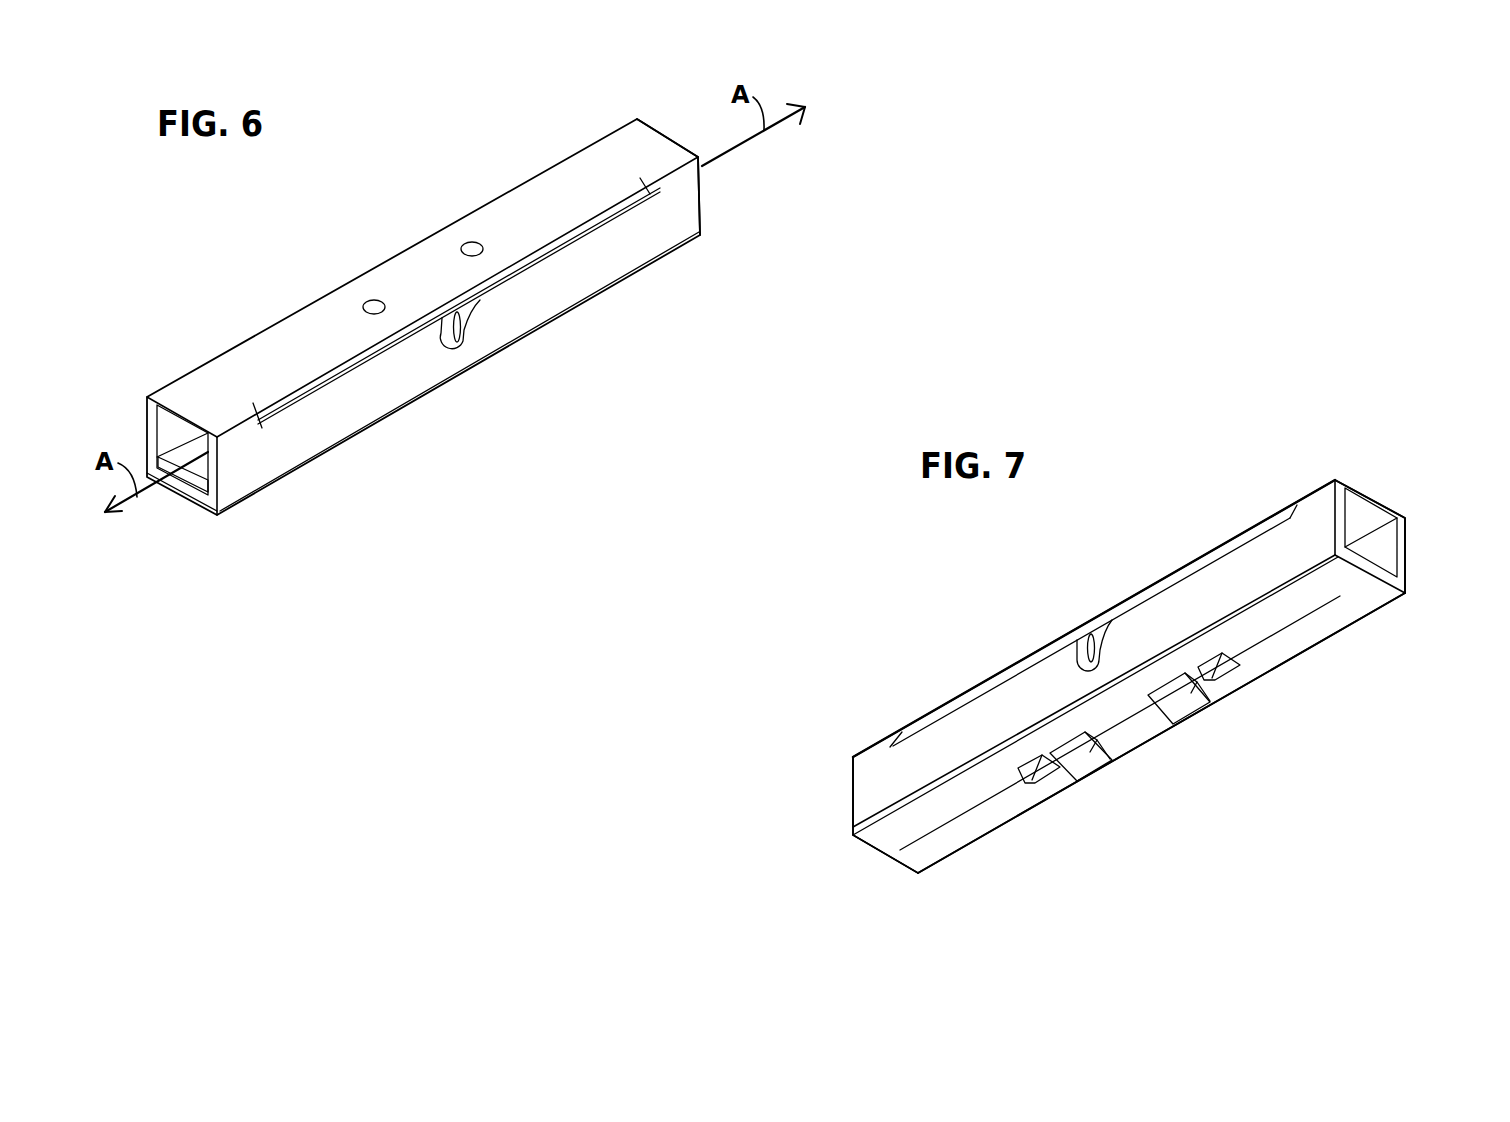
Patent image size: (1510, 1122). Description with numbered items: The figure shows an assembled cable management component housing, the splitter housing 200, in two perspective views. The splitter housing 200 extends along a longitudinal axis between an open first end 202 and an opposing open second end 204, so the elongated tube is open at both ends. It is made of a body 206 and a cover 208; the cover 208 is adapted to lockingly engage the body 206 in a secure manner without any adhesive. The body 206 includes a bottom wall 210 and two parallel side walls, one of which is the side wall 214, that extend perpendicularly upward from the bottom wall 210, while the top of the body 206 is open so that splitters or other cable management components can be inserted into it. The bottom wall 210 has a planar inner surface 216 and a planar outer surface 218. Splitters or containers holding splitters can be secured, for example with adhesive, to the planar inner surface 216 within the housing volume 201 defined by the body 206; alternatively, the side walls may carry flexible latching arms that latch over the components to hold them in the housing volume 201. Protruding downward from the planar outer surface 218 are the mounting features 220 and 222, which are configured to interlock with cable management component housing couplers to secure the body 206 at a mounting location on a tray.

In FIG. 6, the splitter housing 200 is at (549, 112).
In FIG. 7, the splitter housing 200 is at (1317, 430).
In FIG. 7, the housing volume 201 is at (1362, 520).
In FIG. 6, the open first end 202 is at (172, 485).
In FIG. 6, the open second end 204 is at (705, 193).
In FIG. 7, the open second end 204 is at (1403, 548).
In FIG. 6, the body 206 is at (415, 360).
In FIG. 7, the body 206 is at (872, 796).
In FIG. 6, the cover 208 is at (413, 268).
In FIG. 7, the cover 208 is at (1240, 532).
In FIG. 7, the bottom wall 210 is at (937, 840).
In FIG. 7, the side wall 214 is at (877, 767).
In FIG. 6, the planar inner surface 216 is at (205, 476).
In FIG. 7, the planar outer surface 218 is at (993, 805).
In FIG. 7, the mounting feature 220 is at (1042, 775).
In FIG. 7, the mounting feature 222 is at (1087, 760).